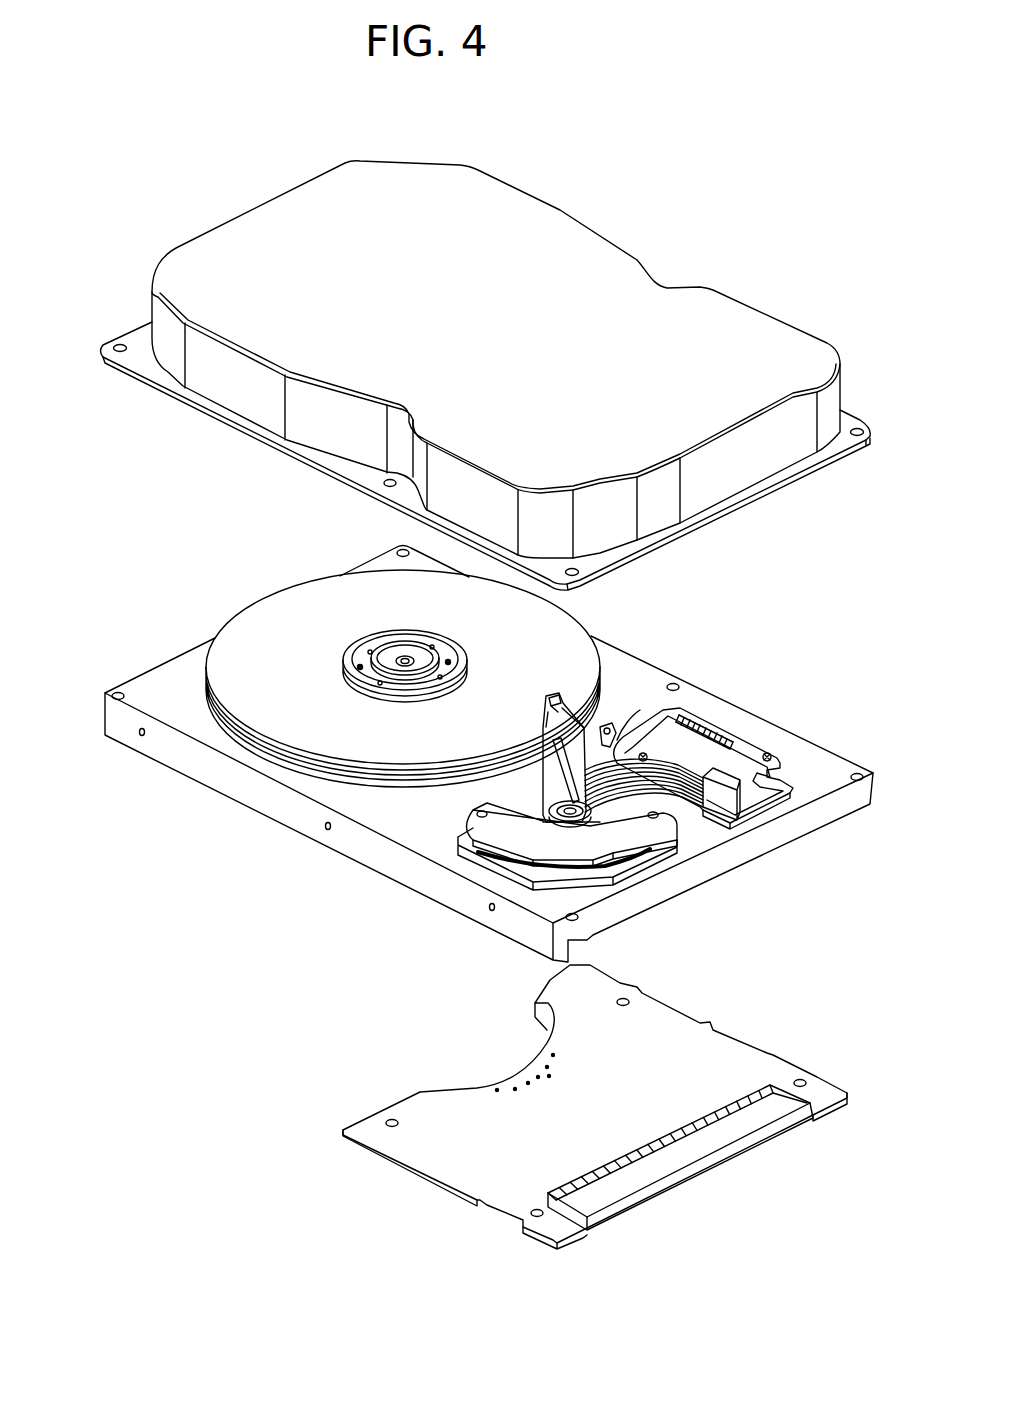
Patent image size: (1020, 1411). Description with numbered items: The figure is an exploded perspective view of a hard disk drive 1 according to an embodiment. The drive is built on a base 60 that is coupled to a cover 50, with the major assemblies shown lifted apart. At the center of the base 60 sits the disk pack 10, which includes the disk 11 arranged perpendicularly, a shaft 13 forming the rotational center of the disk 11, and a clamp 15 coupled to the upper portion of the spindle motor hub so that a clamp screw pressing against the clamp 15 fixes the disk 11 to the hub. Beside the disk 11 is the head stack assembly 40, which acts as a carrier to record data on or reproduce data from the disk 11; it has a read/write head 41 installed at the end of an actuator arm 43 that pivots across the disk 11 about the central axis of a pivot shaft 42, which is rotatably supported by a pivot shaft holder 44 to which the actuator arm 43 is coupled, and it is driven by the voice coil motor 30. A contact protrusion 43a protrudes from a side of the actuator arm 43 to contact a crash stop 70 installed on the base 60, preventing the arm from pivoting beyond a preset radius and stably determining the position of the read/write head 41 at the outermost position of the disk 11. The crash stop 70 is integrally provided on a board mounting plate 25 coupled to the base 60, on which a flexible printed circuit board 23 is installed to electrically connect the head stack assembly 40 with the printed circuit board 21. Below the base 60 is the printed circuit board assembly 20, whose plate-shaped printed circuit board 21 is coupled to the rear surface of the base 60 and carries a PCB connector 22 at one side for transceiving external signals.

The hard disk drive 1 is at (108, 122).
The disk pack 10 is at (322, 648).
The disk 11 is at (222, 675).
The shaft 13 is at (343, 672).
The clamp 15 is at (397, 662).
The printed circuit board assembly 20 is at (533, 1107).
The printed circuit board 21 is at (458, 1168).
The PCB connector 22 is at (692, 1168).
The flexible printed circuit board 23 is at (760, 805).
The board mounting plate 25 is at (787, 800).
The voice coil motor 30 is at (637, 838).
The head stack assembly 40 is at (511, 738).
The read/write head 41 is at (567, 712).
The pivot shaft 42 is at (657, 767).
The actuator arm 43 is at (573, 718).
The contact protrusion 43a is at (585, 792).
The pivot shaft holder 44 is at (735, 737).
The cover 50 is at (811, 355).
The base 60 is at (167, 720).
The crash stop 70 is at (660, 699).